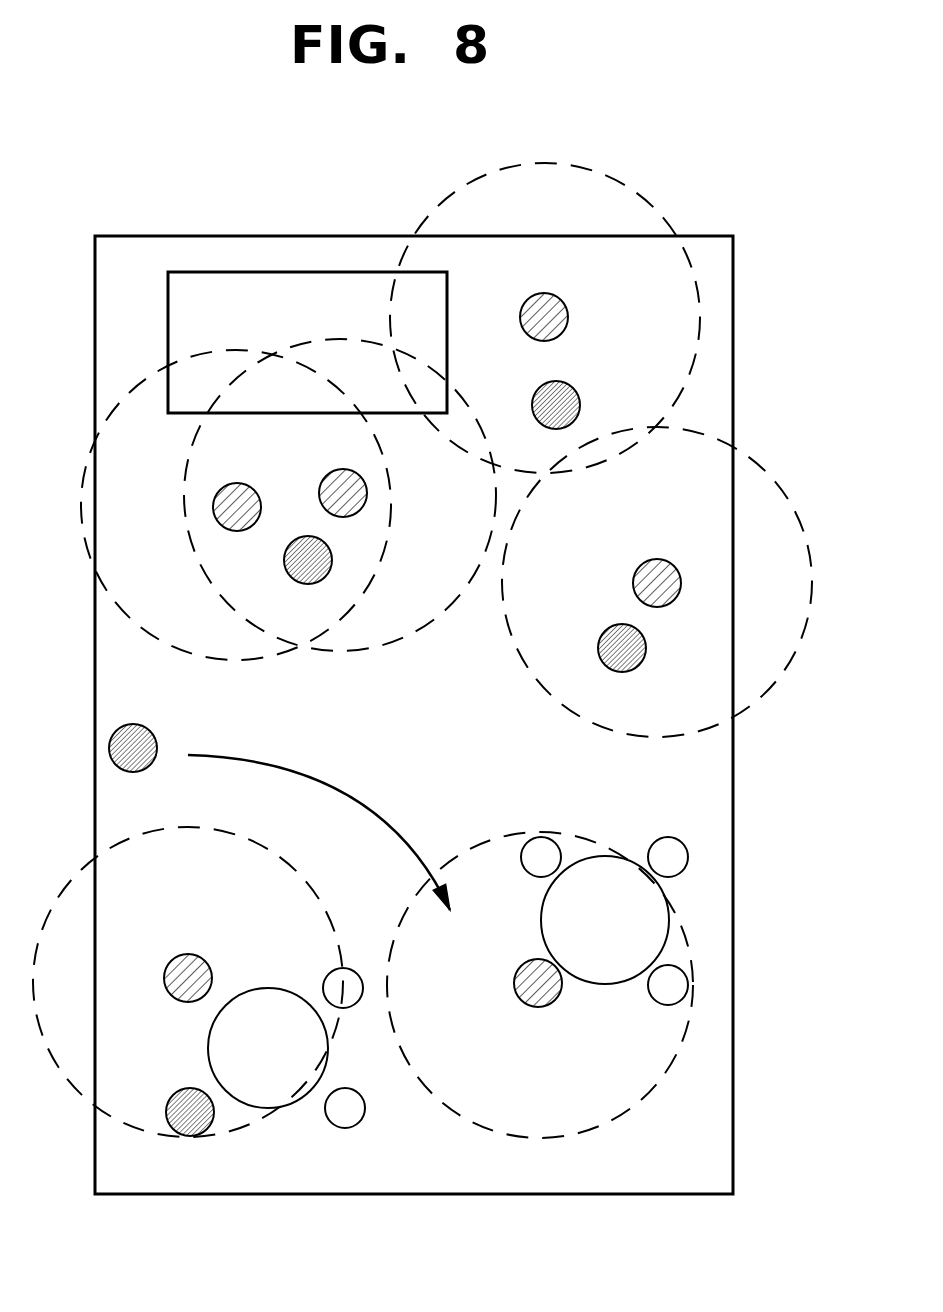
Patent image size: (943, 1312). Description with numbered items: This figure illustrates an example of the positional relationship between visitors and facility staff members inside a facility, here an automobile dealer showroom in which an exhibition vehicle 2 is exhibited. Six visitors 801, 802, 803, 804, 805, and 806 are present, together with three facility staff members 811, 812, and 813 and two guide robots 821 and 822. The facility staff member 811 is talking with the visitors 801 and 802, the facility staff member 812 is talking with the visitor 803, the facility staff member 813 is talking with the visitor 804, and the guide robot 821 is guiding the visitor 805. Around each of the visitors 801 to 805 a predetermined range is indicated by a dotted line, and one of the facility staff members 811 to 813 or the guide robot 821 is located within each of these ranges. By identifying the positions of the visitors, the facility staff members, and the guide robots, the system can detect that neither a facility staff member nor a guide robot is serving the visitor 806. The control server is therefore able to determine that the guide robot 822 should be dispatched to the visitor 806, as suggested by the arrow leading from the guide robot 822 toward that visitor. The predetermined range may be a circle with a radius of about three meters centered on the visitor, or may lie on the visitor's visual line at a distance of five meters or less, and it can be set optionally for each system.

The exhibition vehicle 2 is at (277, 293).
The visitor 801 is at (211, 515).
The visitor 802 is at (368, 487).
The visitor 803 is at (198, 961).
The visitor 804 is at (663, 561).
The visitor 805 is at (567, 300).
The visitor 806 is at (522, 996).
The facility staff member 811 is at (308, 584).
The facility staff member 812 is at (204, 1131).
The facility staff member 813 is at (605, 670).
The guide robot 821 is at (573, 387).
The guide robot 822 is at (144, 725).